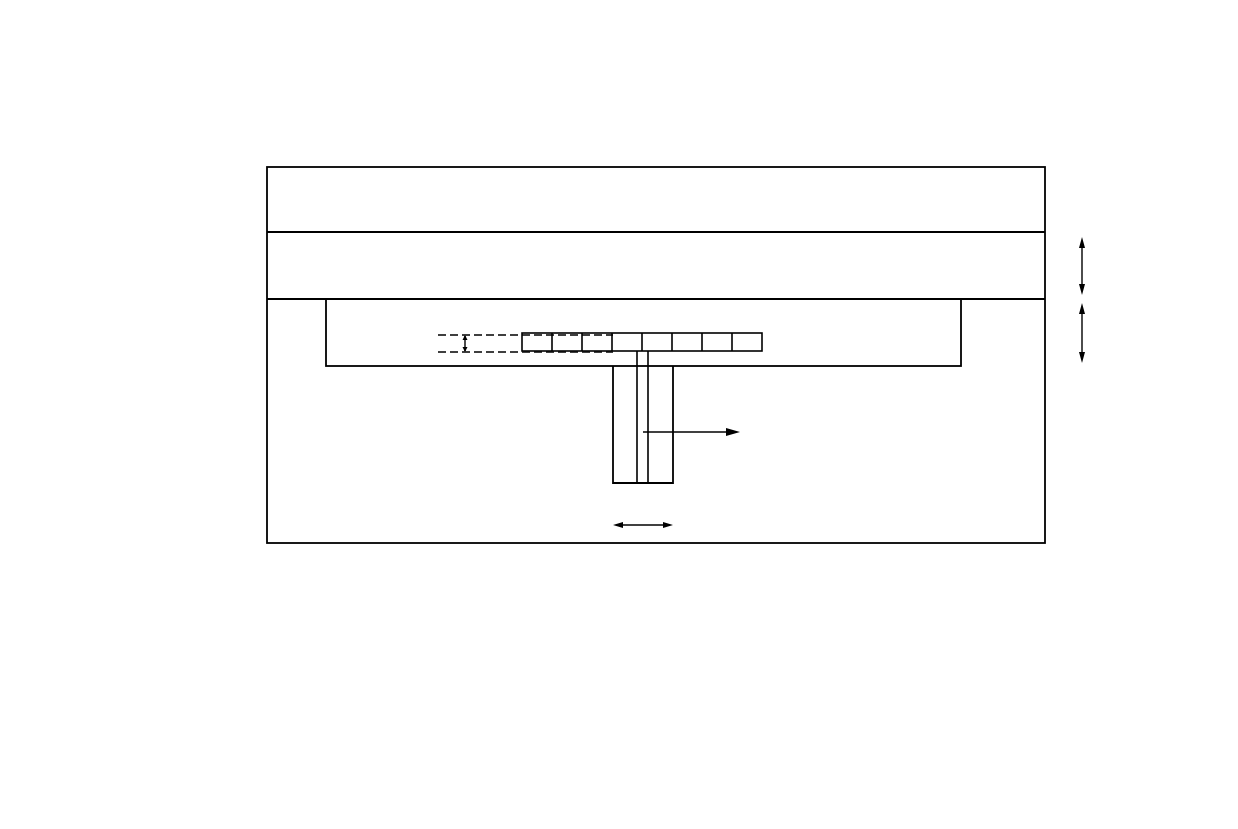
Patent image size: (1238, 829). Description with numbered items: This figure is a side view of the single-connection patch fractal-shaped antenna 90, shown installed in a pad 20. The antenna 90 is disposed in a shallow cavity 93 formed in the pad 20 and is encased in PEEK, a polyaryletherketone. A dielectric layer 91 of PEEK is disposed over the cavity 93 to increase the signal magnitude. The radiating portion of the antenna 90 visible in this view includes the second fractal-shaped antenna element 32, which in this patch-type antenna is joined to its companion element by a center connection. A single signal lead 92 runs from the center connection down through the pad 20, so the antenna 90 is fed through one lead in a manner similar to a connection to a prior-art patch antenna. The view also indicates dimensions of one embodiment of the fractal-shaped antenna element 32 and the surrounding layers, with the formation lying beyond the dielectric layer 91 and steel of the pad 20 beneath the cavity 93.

The single-connection patch fractal-shaped antenna 90 is at (508, 120).
The dielectric layer 91 is at (313, 274).
The cavity 93 is at (370, 322).
The second fractal-shaped antenna element 32 is at (632, 332).
The signal lead 92 is at (640, 441).
The pad 20 is at (1005, 415).